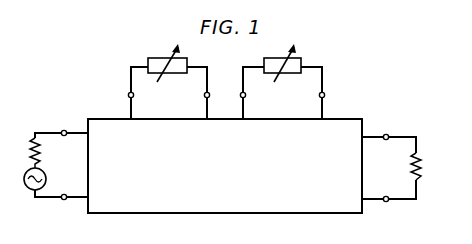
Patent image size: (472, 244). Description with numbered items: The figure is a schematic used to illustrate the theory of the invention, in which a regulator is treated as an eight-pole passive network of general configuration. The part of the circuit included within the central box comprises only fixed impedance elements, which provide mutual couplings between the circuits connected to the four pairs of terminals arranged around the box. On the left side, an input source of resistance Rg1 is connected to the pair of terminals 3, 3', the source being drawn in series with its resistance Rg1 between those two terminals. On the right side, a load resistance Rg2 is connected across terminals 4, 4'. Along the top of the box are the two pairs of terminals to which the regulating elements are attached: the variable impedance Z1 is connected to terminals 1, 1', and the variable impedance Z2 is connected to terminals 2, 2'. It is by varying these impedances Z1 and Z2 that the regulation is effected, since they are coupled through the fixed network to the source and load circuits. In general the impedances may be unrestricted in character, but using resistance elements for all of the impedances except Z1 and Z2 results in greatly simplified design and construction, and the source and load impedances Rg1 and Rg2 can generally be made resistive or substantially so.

The terminal 1 is at (124, 97).
The terminal 1' is at (202, 97).
The terminal 2 is at (248, 97).
The terminal 2' is at (329, 97).
The terminal 3 is at (63, 126).
The terminal 3' is at (63, 205).
The terminal 4 is at (388, 129).
The terminal 4' is at (388, 207).
The variable impedance Z1 is at (169, 81).
The variable impedance Z2 is at (282, 81).
The input source resistance Rg1 is at (56, 165).
The load resistance Rg2 is at (405, 168).